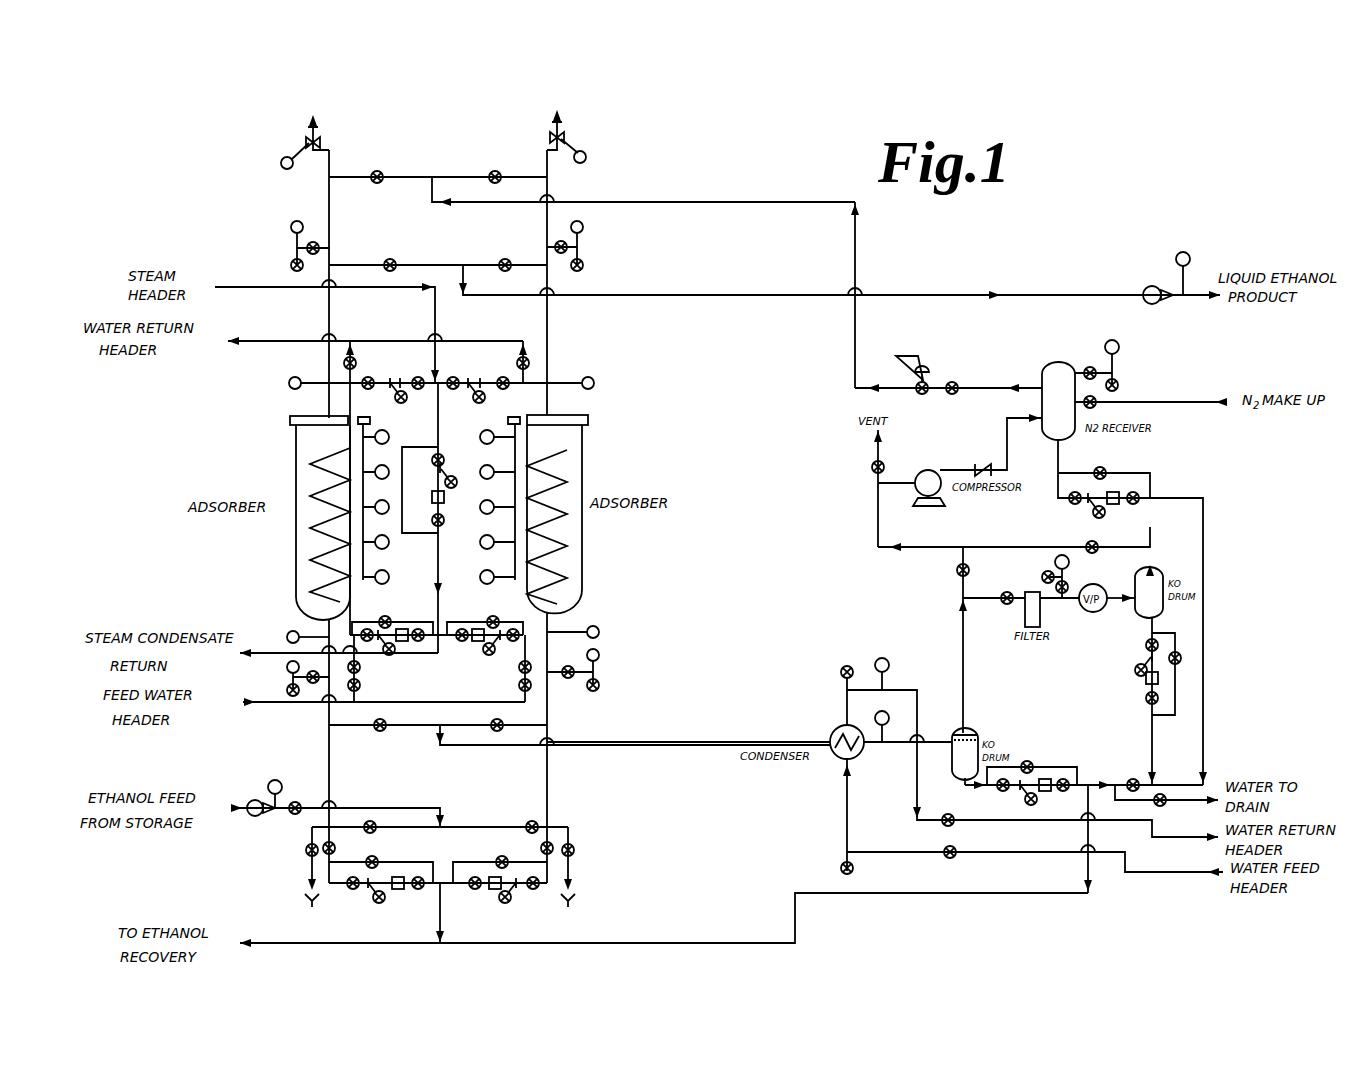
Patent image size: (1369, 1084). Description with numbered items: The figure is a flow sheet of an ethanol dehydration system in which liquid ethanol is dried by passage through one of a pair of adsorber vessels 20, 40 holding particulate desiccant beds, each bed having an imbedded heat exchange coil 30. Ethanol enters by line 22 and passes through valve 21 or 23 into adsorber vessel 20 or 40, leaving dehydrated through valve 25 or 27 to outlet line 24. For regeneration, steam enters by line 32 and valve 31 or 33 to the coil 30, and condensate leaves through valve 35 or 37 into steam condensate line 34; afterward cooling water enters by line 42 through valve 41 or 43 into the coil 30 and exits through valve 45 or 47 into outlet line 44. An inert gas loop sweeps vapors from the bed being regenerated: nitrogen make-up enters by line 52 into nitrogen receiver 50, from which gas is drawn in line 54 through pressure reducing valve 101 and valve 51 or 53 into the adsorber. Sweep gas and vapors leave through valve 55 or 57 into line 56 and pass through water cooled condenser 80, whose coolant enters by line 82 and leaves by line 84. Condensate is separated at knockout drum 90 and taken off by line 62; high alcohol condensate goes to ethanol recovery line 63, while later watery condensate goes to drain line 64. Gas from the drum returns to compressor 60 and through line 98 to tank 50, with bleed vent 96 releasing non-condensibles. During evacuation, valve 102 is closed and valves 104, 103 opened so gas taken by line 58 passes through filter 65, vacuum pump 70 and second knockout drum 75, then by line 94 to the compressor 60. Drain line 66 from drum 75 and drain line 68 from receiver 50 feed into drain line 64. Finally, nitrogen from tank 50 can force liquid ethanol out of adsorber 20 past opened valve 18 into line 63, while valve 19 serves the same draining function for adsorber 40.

The valve 18 is at (336, 849).
The valve 19 is at (540, 848).
The adsorber vessel 20 is at (296, 569).
The valve 21 is at (376, 824).
The line 22 is at (248, 816).
The valve 23 is at (527, 823).
The outlet line 24 is at (752, 280).
The valve 25 is at (392, 262).
The valve 27 is at (506, 262).
The heat exchange coil 30 is at (313, 460).
The valve 31 is at (418, 378).
The line 32 is at (266, 285).
The valve 33 is at (465, 383).
The steam condensate line 34 is at (266, 654).
The valve 35 is at (398, 620).
The valve 37 is at (493, 616).
The adsorber vessel 40 is at (578, 548).
The valve 41 is at (361, 687).
The line 42 is at (262, 708).
The valve 43 is at (518, 686).
The outlet line 44 is at (276, 339).
The valve 45 is at (356, 359).
The valve 47 is at (517, 362).
The nitrogen receiver 50 is at (1068, 350).
The valve 51 is at (378, 170).
The line 52 is at (1180, 404).
The valve 53 is at (495, 170).
The line 54 is at (860, 241).
The valve 55 is at (376, 733).
The line 56 is at (620, 732).
The valve 57 is at (482, 720).
The line 58 is at (965, 684).
The compressor 60 is at (938, 458).
The line 62 is at (966, 785).
The ethanol recovery line 63 is at (340, 944).
The drain line 64 is at (1178, 808).
The filter 65 is at (1022, 612).
The drain line 66 is at (1146, 742).
The drain line 68 is at (1208, 660).
The vacuum pump 70 is at (1104, 571).
The second knockout drum 75 is at (1146, 617).
The condenser 80 is at (834, 726).
The line 82 is at (845, 816).
The line 84 is at (922, 680).
The knockout drum 90 is at (978, 735).
The line 94 is at (1022, 527).
The bleed vent 96 is at (871, 446).
The line 98 is at (1002, 440).
The pressure reducing valve 101 is at (962, 354).
The valve 102 is at (956, 576).
The valve 103 is at (1098, 541).
The valve 104 is at (1016, 577).